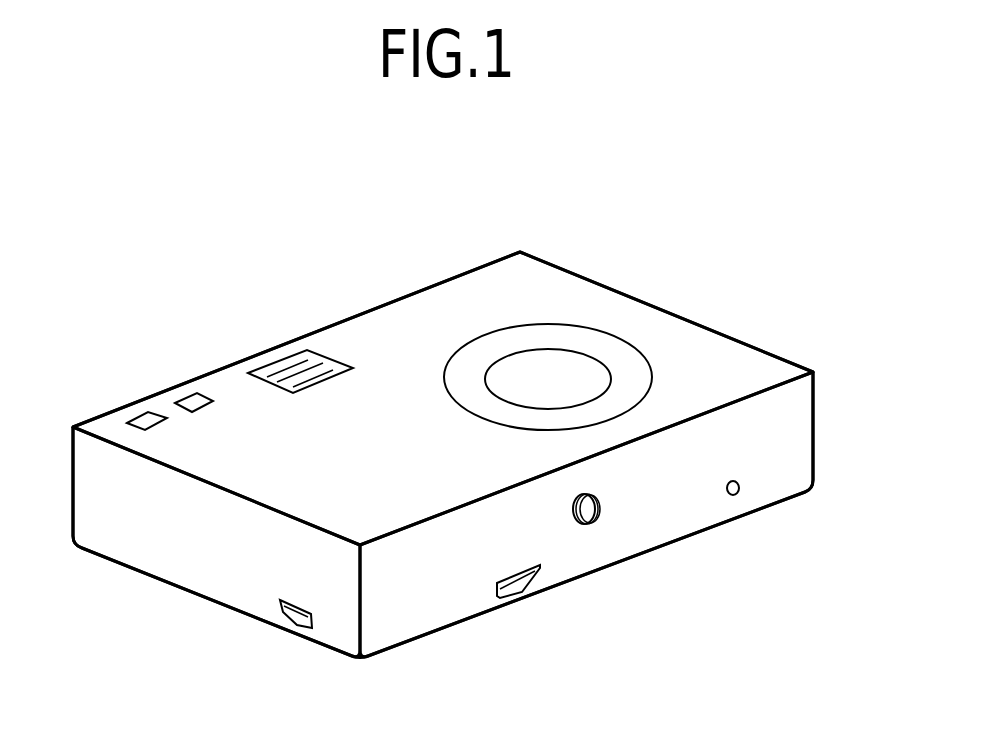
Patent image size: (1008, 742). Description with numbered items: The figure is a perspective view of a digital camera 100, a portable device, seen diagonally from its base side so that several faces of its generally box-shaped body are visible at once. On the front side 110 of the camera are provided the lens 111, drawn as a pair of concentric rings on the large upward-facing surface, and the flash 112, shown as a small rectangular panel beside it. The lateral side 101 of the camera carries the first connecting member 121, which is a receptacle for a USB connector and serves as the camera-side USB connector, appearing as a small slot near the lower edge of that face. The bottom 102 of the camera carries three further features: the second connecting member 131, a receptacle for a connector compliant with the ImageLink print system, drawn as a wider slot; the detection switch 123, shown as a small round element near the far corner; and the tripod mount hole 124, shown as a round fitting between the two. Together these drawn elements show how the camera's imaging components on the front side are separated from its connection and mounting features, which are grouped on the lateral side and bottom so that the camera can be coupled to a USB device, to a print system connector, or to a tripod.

The digital camera 100 is at (720, 265).
The lateral side 101 is at (125, 533).
The bottom 102 is at (793, 435).
The front side 110 is at (560, 280).
The lens 111 is at (527, 363).
The flash 112 is at (297, 348).
The first connecting member 121 is at (287, 630).
The detection switch 123 is at (740, 492).
The tripod mount hole 124 is at (598, 512).
The second connecting member 131 is at (518, 587).